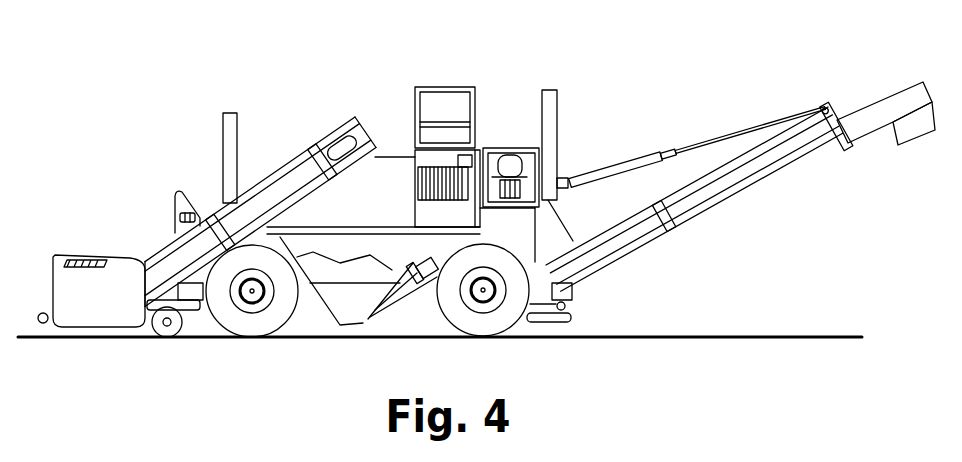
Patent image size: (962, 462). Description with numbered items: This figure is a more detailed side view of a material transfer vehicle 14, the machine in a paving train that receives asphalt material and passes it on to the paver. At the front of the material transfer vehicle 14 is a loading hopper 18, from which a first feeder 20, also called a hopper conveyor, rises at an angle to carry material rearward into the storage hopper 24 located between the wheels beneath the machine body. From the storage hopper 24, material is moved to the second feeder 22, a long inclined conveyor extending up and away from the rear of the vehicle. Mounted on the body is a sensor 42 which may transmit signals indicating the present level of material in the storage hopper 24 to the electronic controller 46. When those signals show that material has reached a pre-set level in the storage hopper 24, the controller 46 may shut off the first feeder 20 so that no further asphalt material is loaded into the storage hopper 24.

The material transfer vehicle 14 is at (275, 74).
The loading hopper 18 is at (80, 312).
The first feeder 20 is at (163, 247).
The second feeder 22 is at (743, 183).
The storage hopper 24 is at (350, 310).
The sensor 42 is at (397, 157).
The electronic controller 46 is at (484, 148).